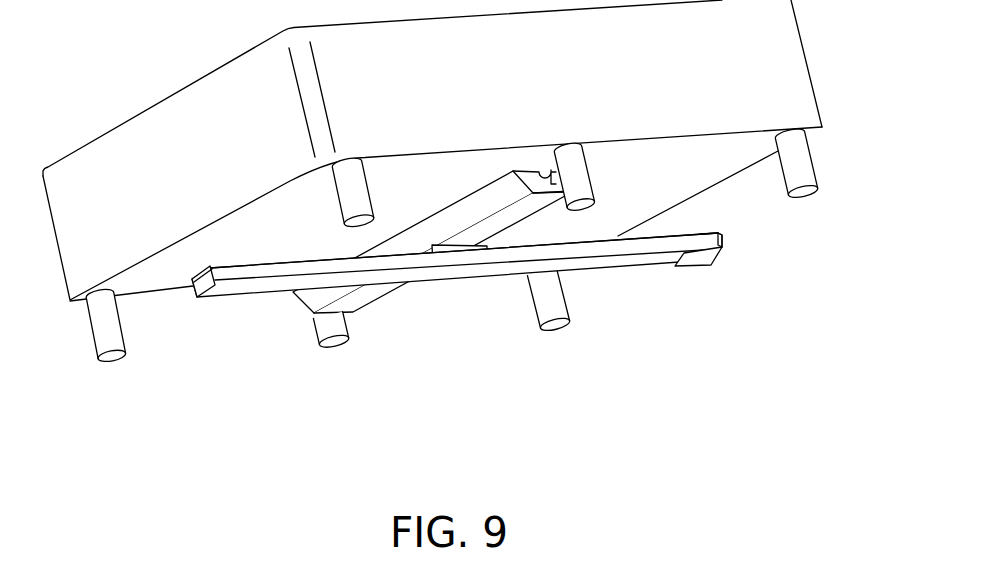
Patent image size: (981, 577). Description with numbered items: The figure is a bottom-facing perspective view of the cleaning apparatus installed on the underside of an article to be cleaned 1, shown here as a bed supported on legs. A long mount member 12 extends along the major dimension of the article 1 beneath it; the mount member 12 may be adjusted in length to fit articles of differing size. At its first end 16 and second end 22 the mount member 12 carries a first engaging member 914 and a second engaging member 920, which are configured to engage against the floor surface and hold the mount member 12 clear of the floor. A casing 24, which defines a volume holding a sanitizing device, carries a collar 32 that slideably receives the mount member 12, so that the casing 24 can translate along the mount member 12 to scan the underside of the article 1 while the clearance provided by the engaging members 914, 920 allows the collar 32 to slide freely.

The article to be cleaned 1 is at (790, 71).
The mount member 12 is at (593, 250).
The first end 16 is at (706, 236).
The second end 22 is at (222, 275).
The casing 24 is at (503, 218).
The collar 32 is at (440, 262).
The first engaging member 914 is at (706, 258).
The second engaging member 920 is at (193, 278).